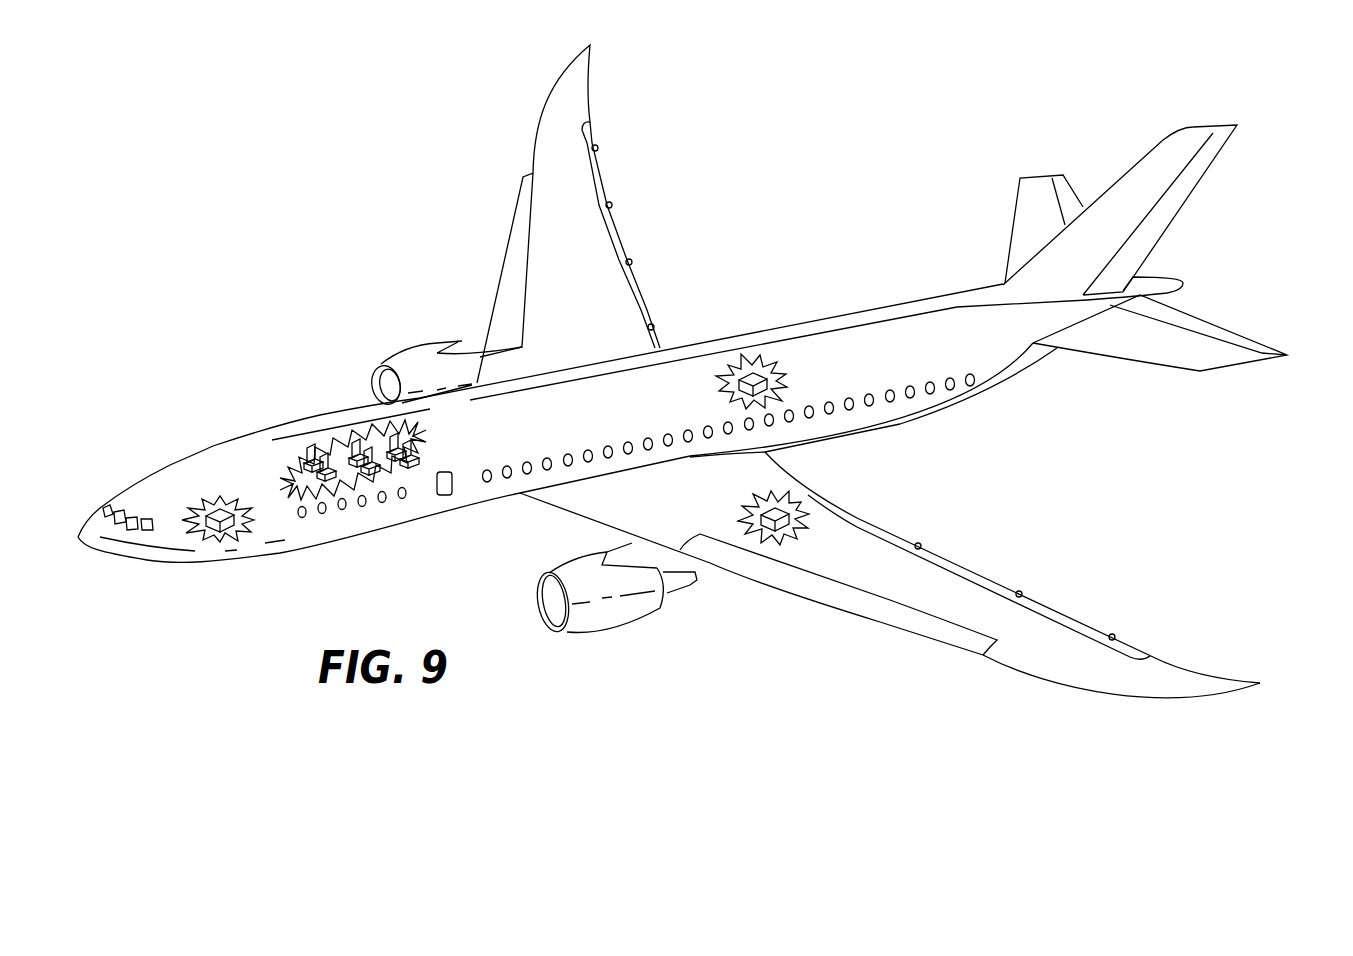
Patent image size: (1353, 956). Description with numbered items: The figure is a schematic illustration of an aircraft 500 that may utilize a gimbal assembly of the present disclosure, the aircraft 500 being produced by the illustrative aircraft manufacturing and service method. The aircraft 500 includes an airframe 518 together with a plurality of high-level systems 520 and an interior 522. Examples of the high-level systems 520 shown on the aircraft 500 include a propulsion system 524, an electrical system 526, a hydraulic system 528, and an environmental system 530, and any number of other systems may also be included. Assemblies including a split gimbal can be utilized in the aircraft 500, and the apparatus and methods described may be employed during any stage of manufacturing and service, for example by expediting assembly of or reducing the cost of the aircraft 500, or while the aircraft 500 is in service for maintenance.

The aircraft 500 is at (352, 208).
The airframe 518 is at (340, 393).
The high-level systems 520 is at (1170, 534).
The interior 522 is at (332, 482).
The propulsion system 524 is at (418, 358).
The electrical system 526 is at (222, 497).
The hydraulic system 528 is at (790, 503).
The environmental system 530 is at (752, 370).